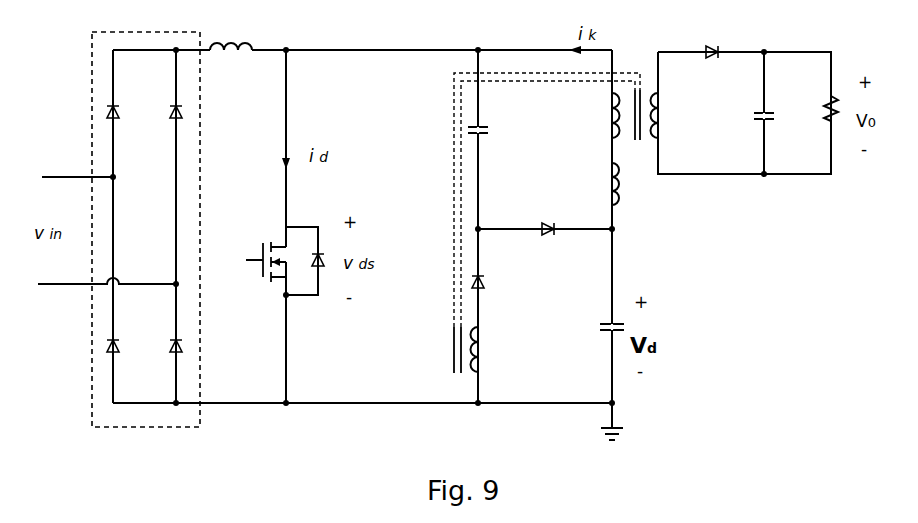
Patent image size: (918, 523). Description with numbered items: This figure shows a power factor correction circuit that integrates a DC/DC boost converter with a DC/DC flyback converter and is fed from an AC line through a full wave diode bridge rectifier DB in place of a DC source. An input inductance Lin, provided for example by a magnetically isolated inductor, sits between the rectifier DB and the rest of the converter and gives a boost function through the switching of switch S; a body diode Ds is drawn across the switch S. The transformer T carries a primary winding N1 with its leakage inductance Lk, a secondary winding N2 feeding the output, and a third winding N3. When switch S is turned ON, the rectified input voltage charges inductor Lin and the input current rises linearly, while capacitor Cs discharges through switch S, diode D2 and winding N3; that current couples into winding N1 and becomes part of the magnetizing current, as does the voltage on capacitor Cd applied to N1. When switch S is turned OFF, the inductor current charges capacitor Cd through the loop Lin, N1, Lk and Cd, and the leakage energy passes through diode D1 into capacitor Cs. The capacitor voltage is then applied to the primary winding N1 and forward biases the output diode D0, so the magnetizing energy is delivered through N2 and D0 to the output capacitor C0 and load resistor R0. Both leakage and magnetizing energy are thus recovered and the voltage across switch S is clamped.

The full wave diode bridge rectifier DB is at (146, 218).
The input inductance Lin is at (231, 31).
The switch S is at (265, 276).
The switch body diode Ds is at (305, 280).
The capacitor Cs is at (491, 135).
The diode D1 is at (549, 246).
The diode D2 is at (493, 286).
The winding N3 is at (547, 223).
The primary winding N1 is at (591, 116).
The leakage inductance Lk is at (596, 184).
The transformer T is at (633, 96).
The transformer secondary winding N2 is at (674, 116).
The output diode D0 is at (711, 37).
The output capacitor C0 is at (750, 130).
The load resistor R0 is at (814, 115).
The capacitor Cd is at (591, 329).